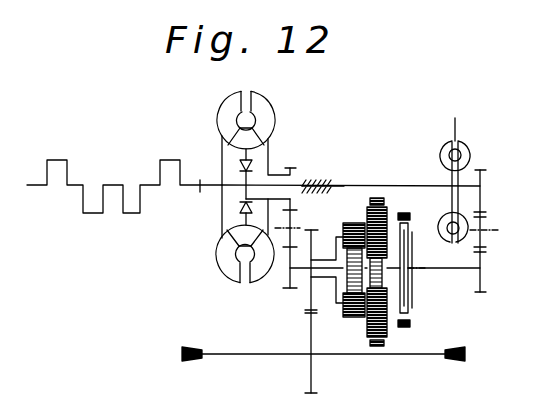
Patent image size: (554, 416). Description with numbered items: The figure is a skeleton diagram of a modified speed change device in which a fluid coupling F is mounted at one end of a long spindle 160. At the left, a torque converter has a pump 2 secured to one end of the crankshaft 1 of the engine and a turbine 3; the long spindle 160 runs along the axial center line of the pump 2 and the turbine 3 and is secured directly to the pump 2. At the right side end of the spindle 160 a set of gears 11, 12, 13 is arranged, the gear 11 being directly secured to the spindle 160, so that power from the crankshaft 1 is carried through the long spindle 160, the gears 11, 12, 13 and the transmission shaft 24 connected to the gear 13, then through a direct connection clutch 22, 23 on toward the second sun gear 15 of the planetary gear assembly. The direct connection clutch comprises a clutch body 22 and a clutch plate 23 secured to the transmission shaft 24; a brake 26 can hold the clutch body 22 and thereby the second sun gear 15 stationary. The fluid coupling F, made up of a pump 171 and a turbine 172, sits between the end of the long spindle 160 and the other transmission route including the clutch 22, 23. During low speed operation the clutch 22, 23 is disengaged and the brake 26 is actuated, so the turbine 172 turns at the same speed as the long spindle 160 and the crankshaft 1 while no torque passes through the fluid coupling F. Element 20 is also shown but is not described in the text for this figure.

The crankshaft 1 is at (197, 184).
The pump 2 is at (228, 108).
The turbine 3 is at (271, 114).
The long spindle 160 is at (344, 185).
The brake 26 is at (403, 212).
The pump 171 is at (441, 152).
The fluid coupling F is at (455, 119).
The turbine 172 is at (467, 152).
The gear 11 is at (482, 183).
The gear 12 is at (482, 222).
The gear 13 is at (482, 262).
The gear 20 is at (308, 300).
The second sun gear 15 is at (337, 290).
The clutch plate 23 is at (409, 296).
The clutch body 22 is at (412, 290).
The transmission shaft 24 is at (447, 269).